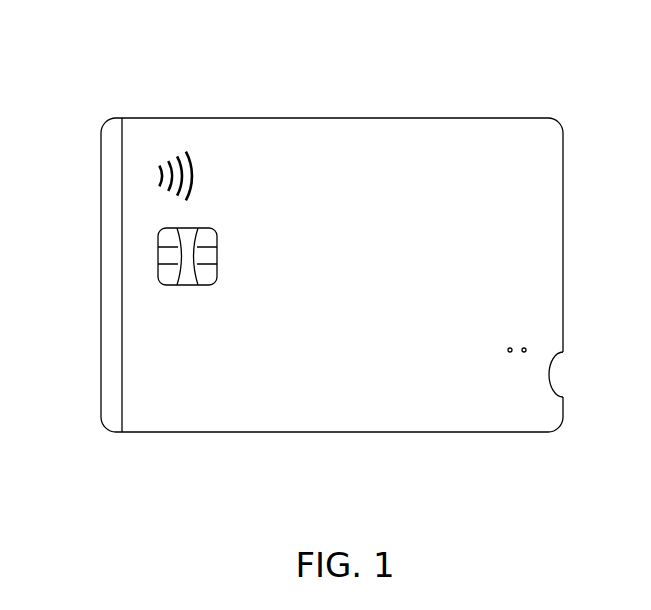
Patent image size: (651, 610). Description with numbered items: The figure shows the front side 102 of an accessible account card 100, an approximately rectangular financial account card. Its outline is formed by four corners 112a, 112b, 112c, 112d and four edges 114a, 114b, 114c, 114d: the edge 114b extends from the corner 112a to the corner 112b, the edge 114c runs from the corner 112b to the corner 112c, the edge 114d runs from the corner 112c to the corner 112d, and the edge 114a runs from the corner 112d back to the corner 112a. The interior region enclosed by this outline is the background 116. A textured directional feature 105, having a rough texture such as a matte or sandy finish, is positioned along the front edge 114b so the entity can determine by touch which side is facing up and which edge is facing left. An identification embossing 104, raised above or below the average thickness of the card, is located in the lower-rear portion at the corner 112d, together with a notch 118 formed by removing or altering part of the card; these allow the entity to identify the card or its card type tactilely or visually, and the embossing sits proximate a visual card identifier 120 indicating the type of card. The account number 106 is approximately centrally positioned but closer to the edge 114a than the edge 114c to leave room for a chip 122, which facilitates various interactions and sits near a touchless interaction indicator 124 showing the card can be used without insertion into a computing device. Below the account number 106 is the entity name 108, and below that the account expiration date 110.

The accessible account card 100 is at (339, 258).
The front side 102 is at (339, 278).
The identification embossing 104 is at (548, 346).
The textured directional feature 105 is at (119, 343).
The account number 106 is at (289, 337).
The entity name 108 is at (250, 373).
The account expiration date 110 is at (193, 405).
The corner 112a is at (103, 418).
The corner 112b is at (103, 133).
The corner 112c is at (549, 118).
The corner 112d is at (565, 425).
The edge 114a is at (403, 431).
The edge 114b is at (101, 274).
The edge 114c is at (259, 117).
The edge 114d is at (565, 250).
The background 116 is at (283, 213).
The notch 118 is at (553, 382).
The visual card identifier 120 is at (502, 417).
The chip 122 is at (159, 241).
The touchless interaction indicator 124 is at (185, 155).